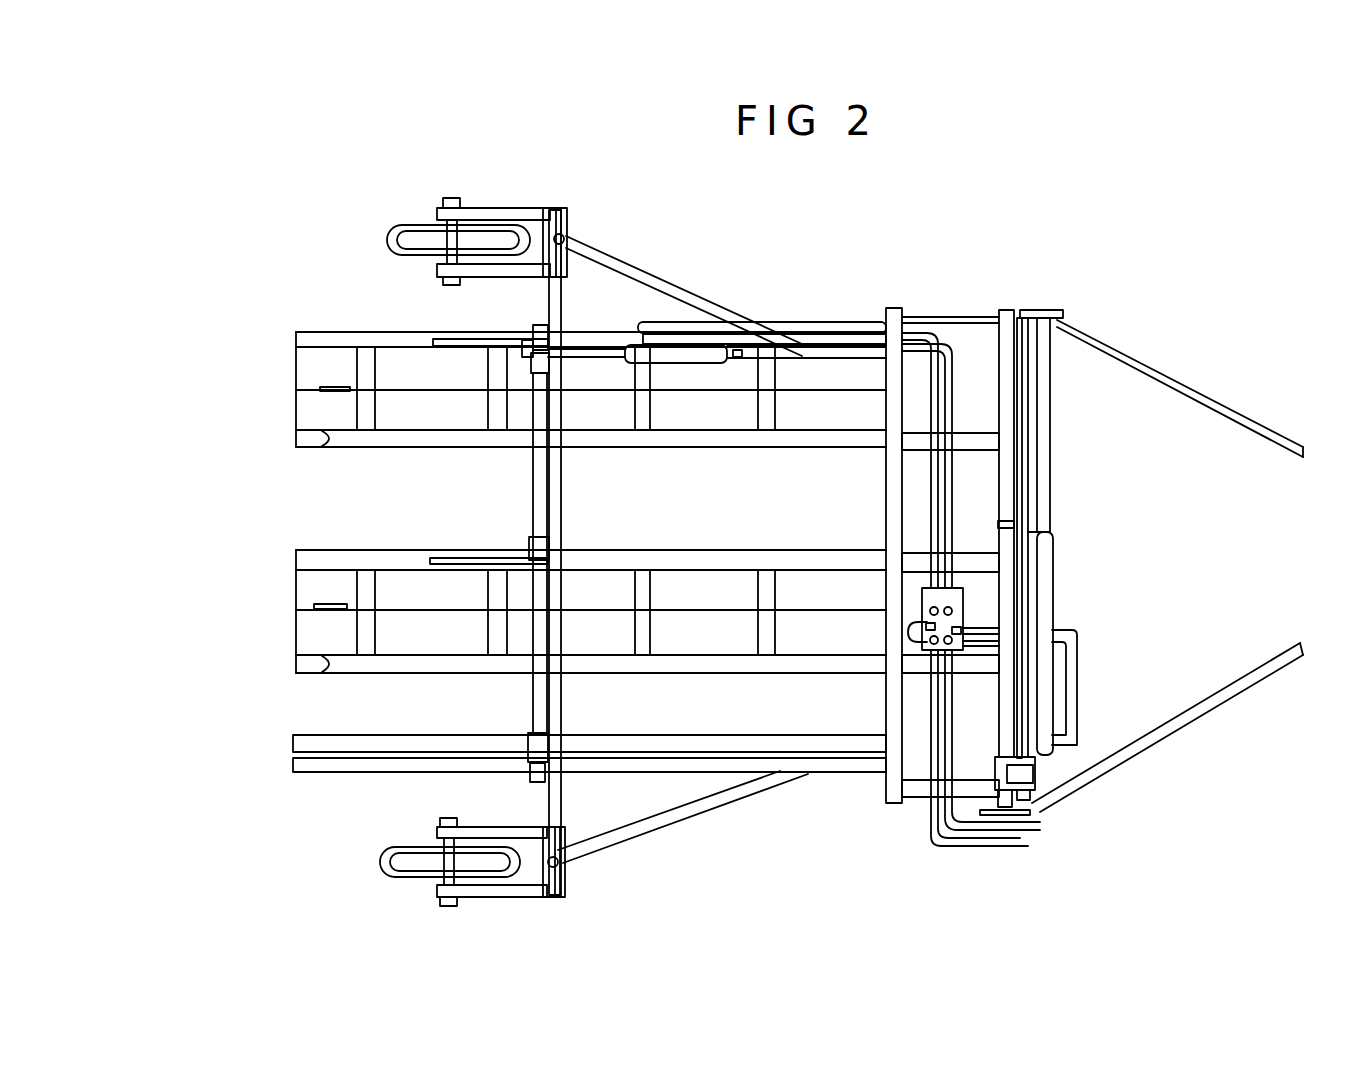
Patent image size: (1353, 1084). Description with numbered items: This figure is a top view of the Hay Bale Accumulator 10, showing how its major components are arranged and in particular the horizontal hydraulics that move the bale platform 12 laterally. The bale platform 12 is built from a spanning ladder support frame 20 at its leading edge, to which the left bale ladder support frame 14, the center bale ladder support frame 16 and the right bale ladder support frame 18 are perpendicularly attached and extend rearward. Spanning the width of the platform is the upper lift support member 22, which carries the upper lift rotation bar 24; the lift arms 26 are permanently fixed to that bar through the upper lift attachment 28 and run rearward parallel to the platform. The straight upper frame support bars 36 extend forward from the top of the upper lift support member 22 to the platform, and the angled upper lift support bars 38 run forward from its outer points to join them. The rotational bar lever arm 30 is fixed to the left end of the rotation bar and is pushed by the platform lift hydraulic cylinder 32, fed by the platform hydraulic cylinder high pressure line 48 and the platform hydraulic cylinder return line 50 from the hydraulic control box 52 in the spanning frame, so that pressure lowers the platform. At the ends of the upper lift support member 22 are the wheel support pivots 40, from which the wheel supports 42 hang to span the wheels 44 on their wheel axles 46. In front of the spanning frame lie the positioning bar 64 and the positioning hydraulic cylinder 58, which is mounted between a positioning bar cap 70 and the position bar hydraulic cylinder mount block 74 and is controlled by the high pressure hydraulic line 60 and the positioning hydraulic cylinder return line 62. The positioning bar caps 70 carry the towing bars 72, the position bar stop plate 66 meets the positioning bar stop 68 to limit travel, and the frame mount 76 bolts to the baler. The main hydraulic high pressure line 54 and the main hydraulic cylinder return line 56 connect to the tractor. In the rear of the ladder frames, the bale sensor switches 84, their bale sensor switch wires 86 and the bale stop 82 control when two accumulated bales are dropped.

The Hay Bale Accumulator 10 is at (898, 280).
The bale platform 12 is at (967, 308).
The left bale ladder support frame 14 is at (290, 374).
The center bale ladder support frame 16 is at (287, 598).
The right bale ladder support frame 18 is at (288, 760).
The spanning ladder support frame 20 is at (906, 805).
The upper lift support member 22 is at (554, 800).
The upper lift rotation bar 24 is at (540, 668).
The lift arms 26 is at (466, 347).
The upper lift attachment 28 is at (542, 748).
The rotational bar lever arm 30 is at (527, 336).
The platform lift hydraulic cylinder 32 is at (634, 350).
The straight upper frame support bars 36 is at (844, 352).
The angled upper lift support bars 38 is at (663, 283).
The wheel support pivots 40 is at (566, 237).
The wheel supports 42 is at (528, 204).
The wheels 44 is at (401, 220).
The wheel axles 46 is at (452, 196).
The platform hydraulic cylinder high pressure line 48 is at (693, 322).
The platform hydraulic cylinder return line 50 is at (808, 325).
The hydraulic control box 52 is at (966, 615).
The main hydraulic high pressure line 54 is at (1042, 836).
The main hydraulic cylinder return line 56 is at (1001, 850).
The positioning hydraulic cylinder 58 is at (1057, 545).
The high pressure hydraulic line 60 is at (1079, 712).
The positioning hydraulic cylinder return line 62 is at (1068, 668).
The positioning bar 64 is at (1030, 446).
The position bar stop plate 66 is at (1025, 322).
The positioning bar stop 68 is at (1004, 519).
The positioning bar caps 70 is at (1056, 302).
The towing bars 72 is at (1300, 463).
The position bar hydraulic cylinder mount block 74 is at (1058, 764).
The frame mount 76 is at (1025, 775).
The bale stop 82 is at (328, 437).
The bale sensor switches 84 is at (340, 393).
The bale sensor switch wires 86 is at (855, 397).